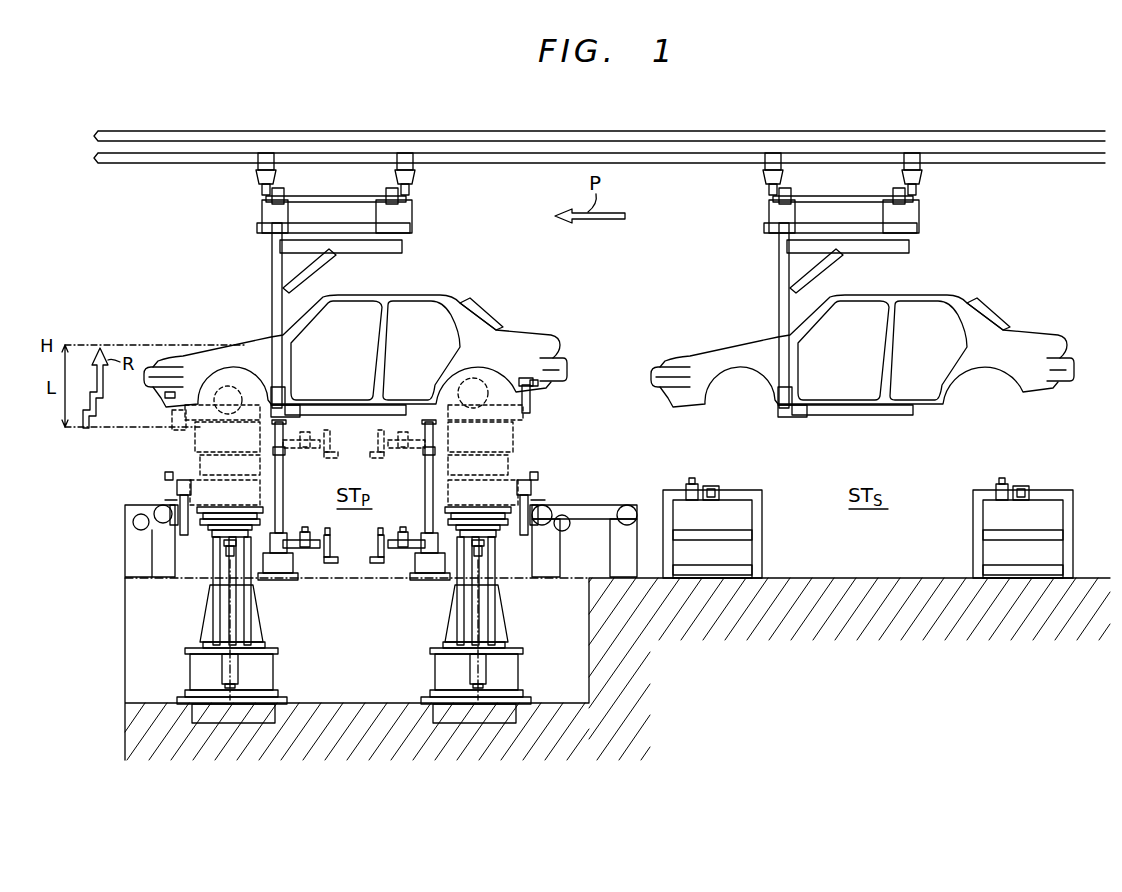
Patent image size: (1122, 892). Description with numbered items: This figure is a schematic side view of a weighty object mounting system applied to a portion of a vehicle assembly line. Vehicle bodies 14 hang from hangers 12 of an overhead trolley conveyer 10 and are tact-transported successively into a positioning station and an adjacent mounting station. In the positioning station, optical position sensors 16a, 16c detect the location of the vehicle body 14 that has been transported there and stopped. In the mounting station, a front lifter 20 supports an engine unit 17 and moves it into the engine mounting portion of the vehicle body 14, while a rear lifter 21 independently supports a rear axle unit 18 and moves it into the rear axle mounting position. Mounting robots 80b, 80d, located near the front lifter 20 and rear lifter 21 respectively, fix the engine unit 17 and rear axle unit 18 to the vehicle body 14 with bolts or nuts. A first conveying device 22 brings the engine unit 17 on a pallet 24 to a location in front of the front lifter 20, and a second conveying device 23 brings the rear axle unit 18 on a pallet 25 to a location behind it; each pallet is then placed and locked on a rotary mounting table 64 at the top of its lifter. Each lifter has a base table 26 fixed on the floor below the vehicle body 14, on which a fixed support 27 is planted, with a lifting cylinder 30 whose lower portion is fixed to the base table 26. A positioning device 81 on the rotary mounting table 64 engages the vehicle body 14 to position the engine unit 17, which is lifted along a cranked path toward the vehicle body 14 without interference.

The trolley conveyer 10 is at (643, 123).
The hanger 12 is at (272, 263).
The vehicle body 14 is at (440, 296).
The optical position sensor 16a is at (680, 492).
The optical position sensor 16c is at (990, 492).
The engine unit 17 is at (258, 345).
The rear axle unit 18 is at (483, 382).
The front lifter 20 is at (274, 563).
The rear lifter 21 is at (438, 563).
The first conveying device 22 is at (126, 504).
The second conveying device 23 is at (590, 503).
The pallet 24 is at (268, 503).
The pallet 25 is at (440, 503).
The base table 26 is at (282, 644).
The fixed support 27 is at (212, 560).
The lifting cylinder 30 is at (232, 600).
The rotary mounting table 64 is at (174, 421).
The mounting robot 80b is at (323, 459).
The mounting robot 80d is at (385, 459).
The positioning device 81 is at (165, 395).